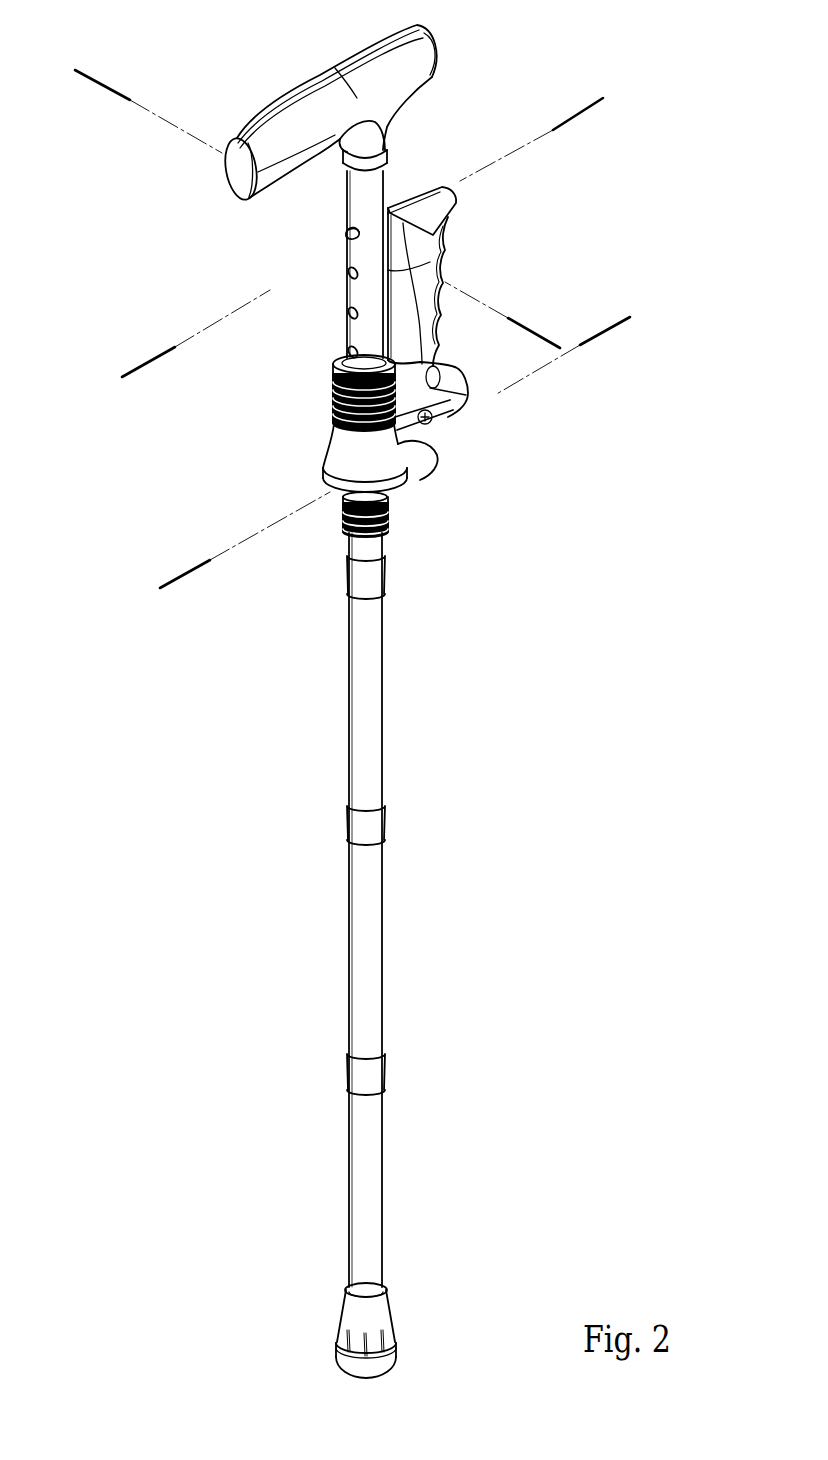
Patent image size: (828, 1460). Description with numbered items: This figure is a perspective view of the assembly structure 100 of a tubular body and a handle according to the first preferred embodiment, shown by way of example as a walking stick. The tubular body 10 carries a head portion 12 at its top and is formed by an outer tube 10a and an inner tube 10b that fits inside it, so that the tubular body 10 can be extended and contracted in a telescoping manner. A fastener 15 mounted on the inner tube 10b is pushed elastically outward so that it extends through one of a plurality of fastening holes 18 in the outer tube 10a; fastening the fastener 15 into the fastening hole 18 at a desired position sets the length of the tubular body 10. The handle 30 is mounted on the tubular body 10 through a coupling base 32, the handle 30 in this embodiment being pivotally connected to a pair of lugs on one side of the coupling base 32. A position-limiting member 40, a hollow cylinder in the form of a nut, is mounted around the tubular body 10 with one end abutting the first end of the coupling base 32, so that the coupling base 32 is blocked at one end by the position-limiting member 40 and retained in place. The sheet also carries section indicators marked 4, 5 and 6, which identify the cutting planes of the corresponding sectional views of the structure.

The assembly structure of a tubular body and a handle 100 is at (205, 246).
The head portion 12 is at (298, 92).
The tubular body 10 is at (318, 298).
The outer tube 10a is at (353, 336).
The inner tube 10b is at (383, 698).
The fastener 15 is at (343, 236).
The fastening holes 18 is at (345, 273).
The handle 30 is at (440, 170).
The coupling base 32 is at (347, 461).
The position-limiting member 40 is at (315, 398).
The section line 4- 4 is at (102, 32).
The section line 5- 5 is at (614, 338).
The section line 6- 6 is at (577, 58).